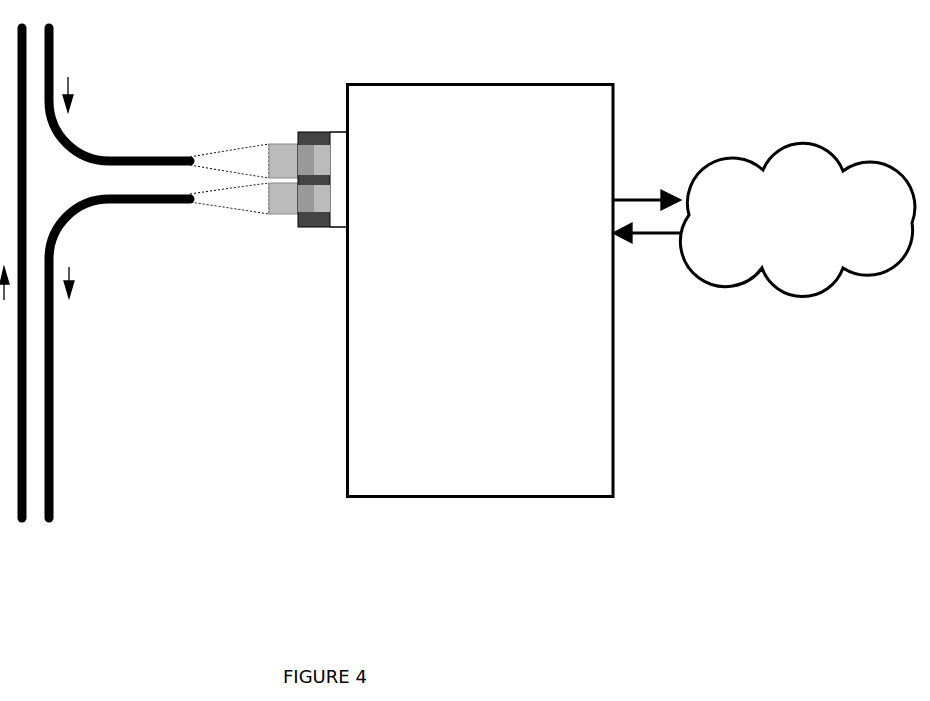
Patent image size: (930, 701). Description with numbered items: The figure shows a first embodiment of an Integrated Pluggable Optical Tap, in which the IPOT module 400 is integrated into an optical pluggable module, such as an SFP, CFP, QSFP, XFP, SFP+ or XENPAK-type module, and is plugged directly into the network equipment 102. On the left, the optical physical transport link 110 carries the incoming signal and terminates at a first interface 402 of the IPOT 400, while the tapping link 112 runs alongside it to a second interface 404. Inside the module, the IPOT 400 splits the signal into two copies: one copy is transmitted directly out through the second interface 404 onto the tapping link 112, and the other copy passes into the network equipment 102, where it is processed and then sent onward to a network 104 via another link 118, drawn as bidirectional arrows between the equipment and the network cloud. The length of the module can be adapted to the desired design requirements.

The network equipment 102 is at (613, 388).
The network 104 is at (810, 297).
The optical physical transport link 110 is at (110, 157).
The tapping link 112 is at (115, 201).
The link 118 is at (655, 195).
The Integrated Pluggable Optical Tap module 400 is at (335, 228).
The first interface 402 is at (240, 147).
The second interface 404 is at (250, 213).